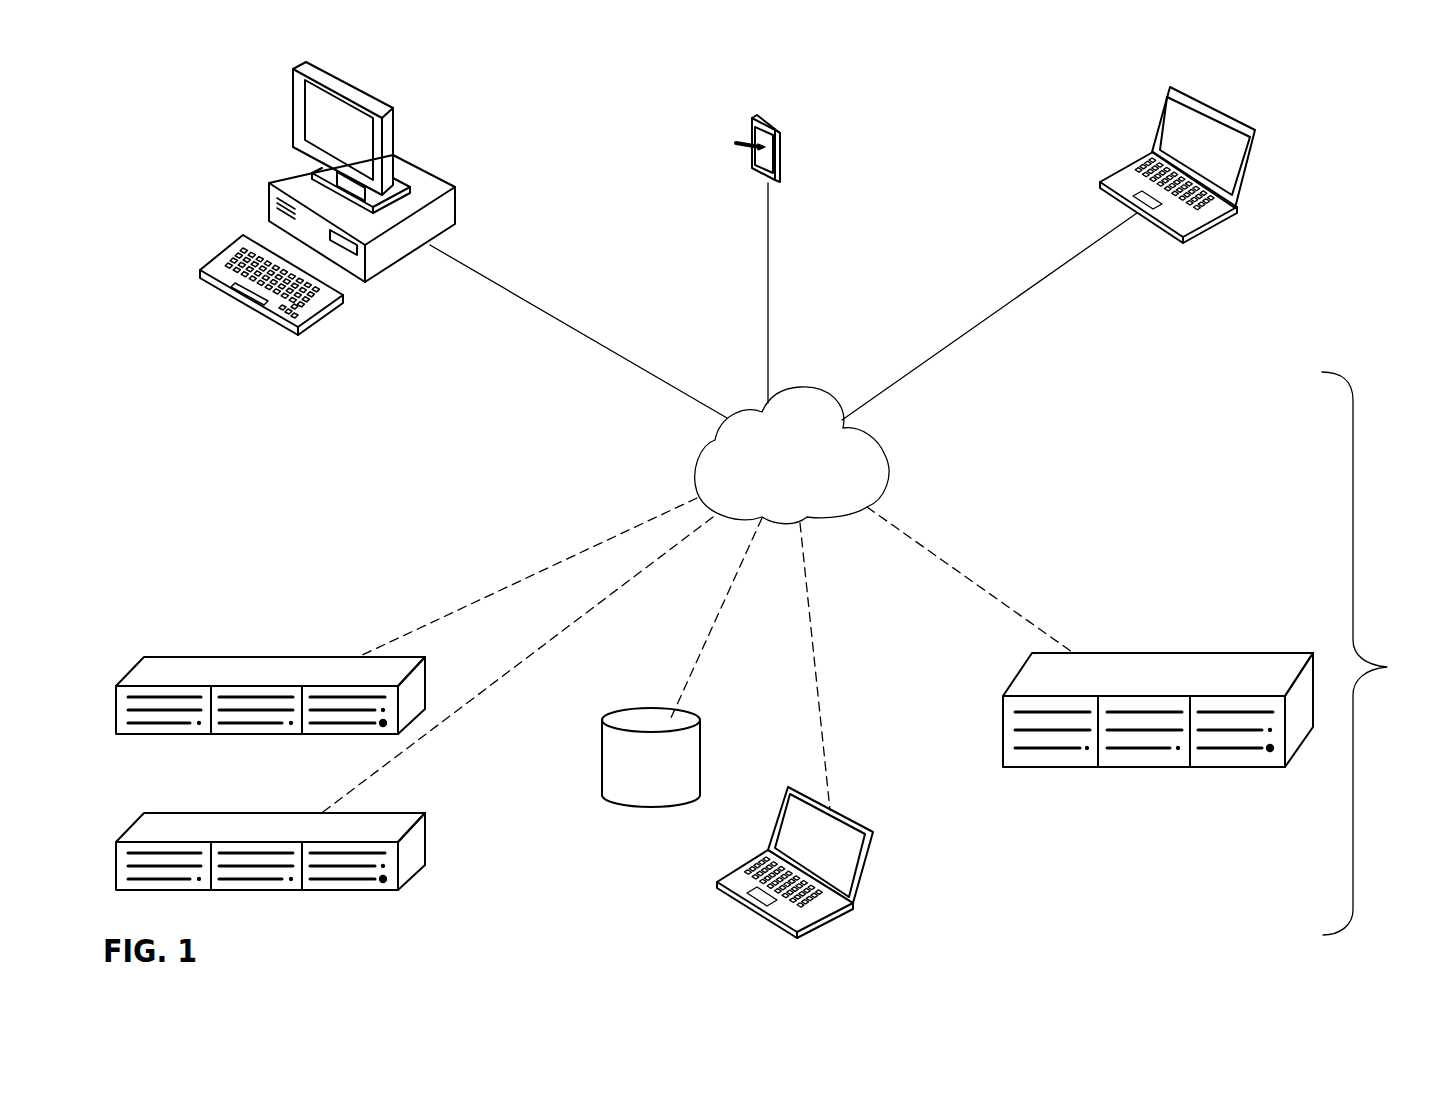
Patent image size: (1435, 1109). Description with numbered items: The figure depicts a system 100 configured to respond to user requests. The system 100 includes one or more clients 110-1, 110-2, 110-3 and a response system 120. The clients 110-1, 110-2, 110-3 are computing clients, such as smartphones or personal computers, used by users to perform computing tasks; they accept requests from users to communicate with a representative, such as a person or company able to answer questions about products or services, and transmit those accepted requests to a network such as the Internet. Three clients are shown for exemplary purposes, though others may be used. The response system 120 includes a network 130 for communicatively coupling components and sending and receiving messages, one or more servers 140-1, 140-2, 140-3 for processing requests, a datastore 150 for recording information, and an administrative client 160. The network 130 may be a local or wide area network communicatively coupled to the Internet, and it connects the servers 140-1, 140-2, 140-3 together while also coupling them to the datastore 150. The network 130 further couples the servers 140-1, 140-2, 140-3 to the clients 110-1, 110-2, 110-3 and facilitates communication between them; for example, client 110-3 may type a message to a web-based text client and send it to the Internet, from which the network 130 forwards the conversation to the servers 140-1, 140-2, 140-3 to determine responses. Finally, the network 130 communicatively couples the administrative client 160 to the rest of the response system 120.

The system 100 is at (140, 63).
The client 110-1 is at (388, 146).
The client 110-2 is at (777, 158).
The client 110-3 is at (1255, 132).
The response system 120 is at (1378, 653).
The network 130 is at (812, 469).
The server 140-1 is at (157, 660).
The server 140-2 is at (405, 885).
The server 140-3 is at (1200, 653).
The datastore 150 is at (670, 768).
The administrative client 160 is at (873, 833).